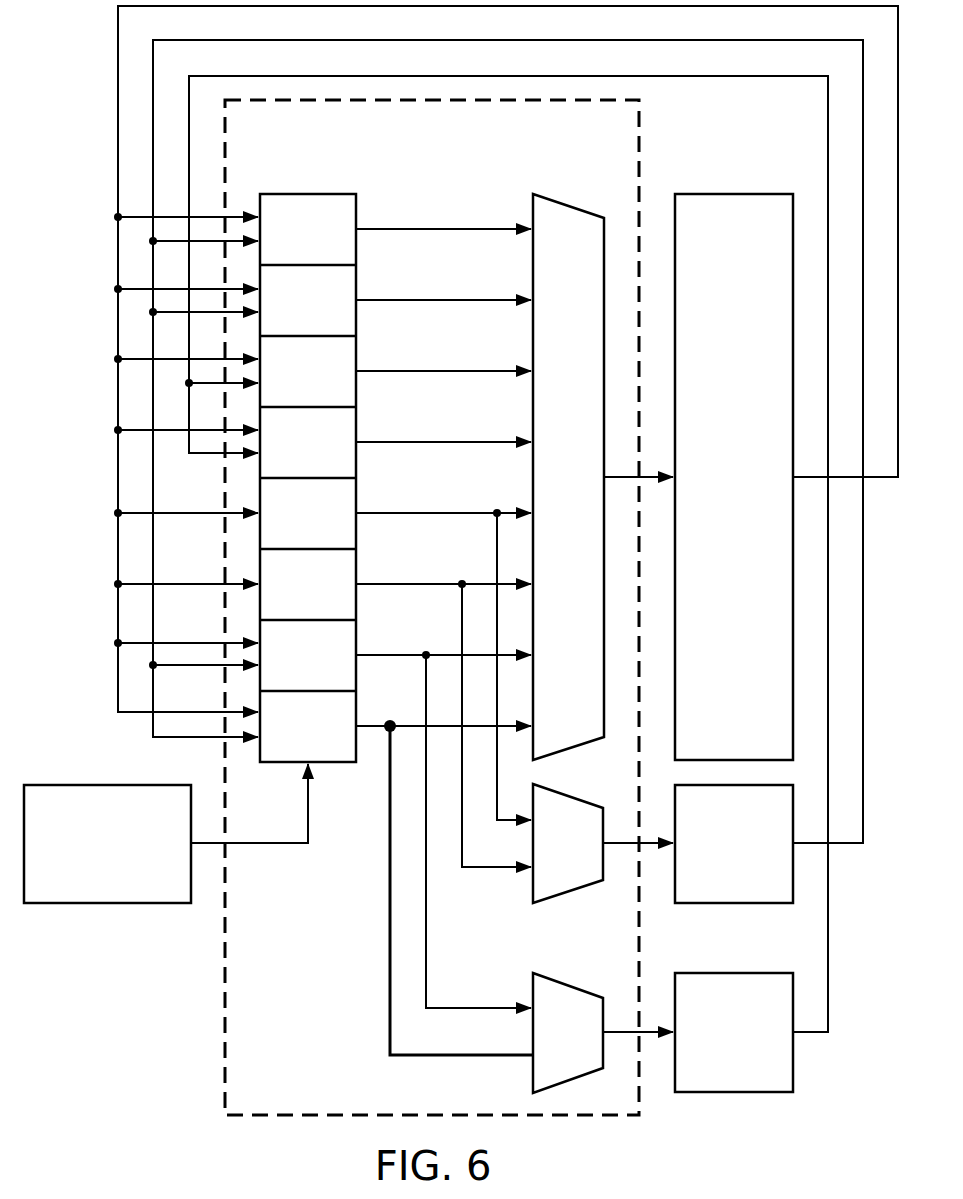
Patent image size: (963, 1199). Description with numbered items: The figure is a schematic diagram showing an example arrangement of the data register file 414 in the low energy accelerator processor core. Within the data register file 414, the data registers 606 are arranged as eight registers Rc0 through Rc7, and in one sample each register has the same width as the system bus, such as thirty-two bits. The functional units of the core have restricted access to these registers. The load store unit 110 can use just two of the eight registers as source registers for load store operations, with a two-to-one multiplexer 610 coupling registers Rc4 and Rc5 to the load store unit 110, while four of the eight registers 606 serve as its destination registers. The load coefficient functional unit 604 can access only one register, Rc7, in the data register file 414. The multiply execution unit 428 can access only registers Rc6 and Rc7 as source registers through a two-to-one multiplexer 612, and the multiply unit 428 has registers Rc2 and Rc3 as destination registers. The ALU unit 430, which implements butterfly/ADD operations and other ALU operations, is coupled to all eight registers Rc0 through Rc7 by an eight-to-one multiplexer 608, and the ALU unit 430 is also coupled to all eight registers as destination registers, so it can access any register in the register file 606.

The data register file 414 is at (411, 178).
The data registers 606 is at (296, 186).
The 8 to 1 multiplexer 608 is at (547, 490).
The 2 to 1 multiplexer 610 is at (547, 858).
The 2 to 1 multiplexer 612 is at (547, 1045).
The ALU unit 430 is at (712, 527).
The load store unit 110 is at (733, 904).
The multiply execution unit 428 is at (731, 1093).
The load coefficient functional unit 604 is at (106, 904).